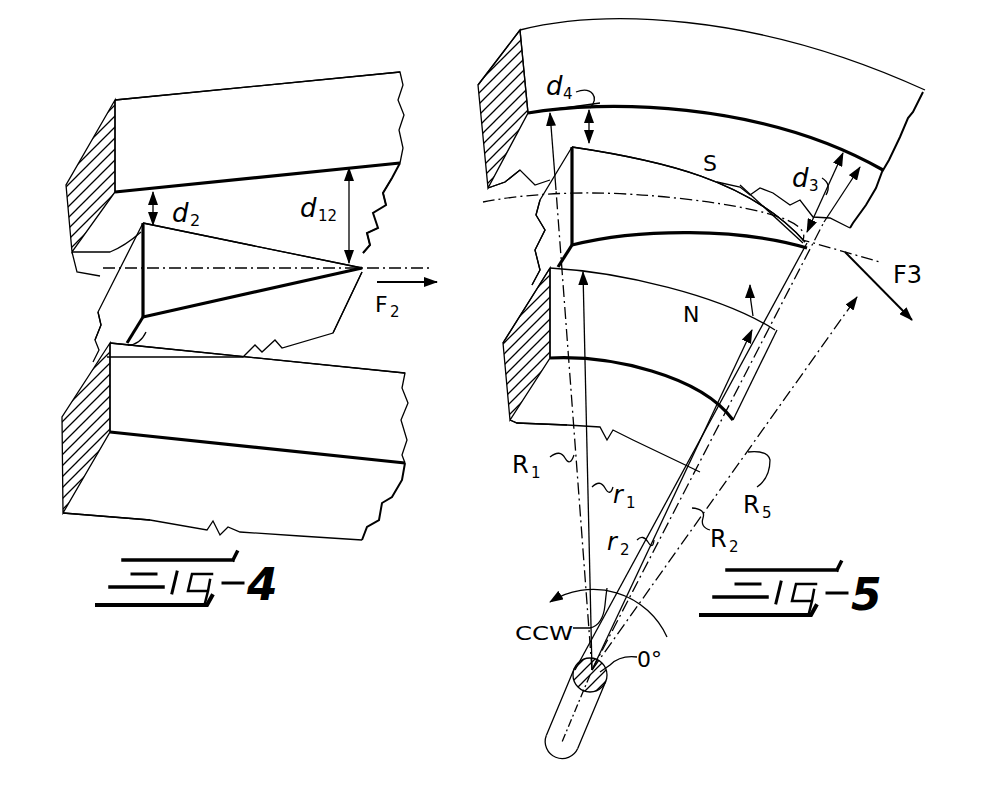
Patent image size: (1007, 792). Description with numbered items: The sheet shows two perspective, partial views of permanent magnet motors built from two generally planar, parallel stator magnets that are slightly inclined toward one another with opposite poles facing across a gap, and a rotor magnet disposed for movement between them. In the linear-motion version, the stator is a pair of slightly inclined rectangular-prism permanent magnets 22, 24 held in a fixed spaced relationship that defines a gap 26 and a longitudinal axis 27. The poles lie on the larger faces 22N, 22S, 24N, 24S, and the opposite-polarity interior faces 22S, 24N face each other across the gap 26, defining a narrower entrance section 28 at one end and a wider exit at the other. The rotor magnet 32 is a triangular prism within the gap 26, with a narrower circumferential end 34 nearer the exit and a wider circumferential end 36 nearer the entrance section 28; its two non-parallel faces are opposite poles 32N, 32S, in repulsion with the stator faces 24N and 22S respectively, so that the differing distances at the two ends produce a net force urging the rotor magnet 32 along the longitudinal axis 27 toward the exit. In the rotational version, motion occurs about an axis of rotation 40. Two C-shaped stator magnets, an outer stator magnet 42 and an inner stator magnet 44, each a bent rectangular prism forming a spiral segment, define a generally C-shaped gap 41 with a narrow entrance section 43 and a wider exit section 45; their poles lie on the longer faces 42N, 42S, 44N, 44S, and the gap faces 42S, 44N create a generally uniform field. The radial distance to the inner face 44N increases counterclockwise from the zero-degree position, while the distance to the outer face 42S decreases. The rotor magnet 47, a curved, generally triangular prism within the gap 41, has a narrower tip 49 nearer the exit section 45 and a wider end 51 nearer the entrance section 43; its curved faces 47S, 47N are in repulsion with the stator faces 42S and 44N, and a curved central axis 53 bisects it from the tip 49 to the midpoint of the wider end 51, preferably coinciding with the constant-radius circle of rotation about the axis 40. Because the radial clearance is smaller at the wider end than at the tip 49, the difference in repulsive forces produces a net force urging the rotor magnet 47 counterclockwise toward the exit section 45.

In FIG. 4, the stator magnet 22 is at (318, 78).
In FIG. 4, the north pole face of stator magnet 22N is at (110, 112).
In FIG. 4, the south pole face of stator magnet 22S is at (80, 205).
In FIG. 4, the stator magnet 24 is at (355, 503).
In FIG. 4, the north pole face of stator magnet 24N is at (80, 392).
In FIG. 4, the south pole face of stator magnet 24S is at (80, 492).
In FIG. 4, the gap 26 is at (380, 197).
In FIG. 5, the gap 26 is at (660, 224).
In FIG. 4, the longitudinal axis 27 is at (393, 253).
In FIG. 4, the gap entrance section 28 is at (80, 312).
In FIG. 4, the rotor magnet 32 is at (267, 247).
In FIG. 4, the north pole face of rotor magnet 32N is at (102, 348).
In FIG. 4, the south pole face of rotor magnet 32S is at (110, 253).
In FIG. 4, the narrower circumferential end 34 is at (363, 277).
In FIG. 4, the wider circumferential end 36 is at (113, 295).
In FIG. 5, the axis of rotation 40 is at (598, 706).
In FIG. 5, the gap 41 is at (545, 145).
In FIG. 5, the outer stator magnet 42 is at (550, 32).
In FIG. 5, the north pole face of outer stator magnet 42N is at (508, 57).
In FIG. 5, the south pole face of outer stator magnet 42S is at (497, 155).
In FIG. 5, the gap entrance section 43 is at (523, 208).
In FIG. 5, the inner stator magnet 44 is at (667, 433).
In FIG. 5, the north pole face of inner stator magnet 44N is at (543, 310).
In FIG. 5, the south pole face of inner stator magnet 44S is at (540, 407).
In FIG. 5, the gap exit section 45 is at (796, 314).
In FIG. 5, the rotor magnet 47 is at (767, 320).
In FIG. 5, the north pole face of rotor magnet 47N is at (660, 257).
In FIG. 5, the south pole face of rotor magnet 47S is at (703, 160).
In FIG. 5, the tip 49 is at (808, 240).
In FIG. 5, the wider circumferential end 51 is at (533, 234).
In FIG. 5, the curved central axis 53 is at (745, 200).